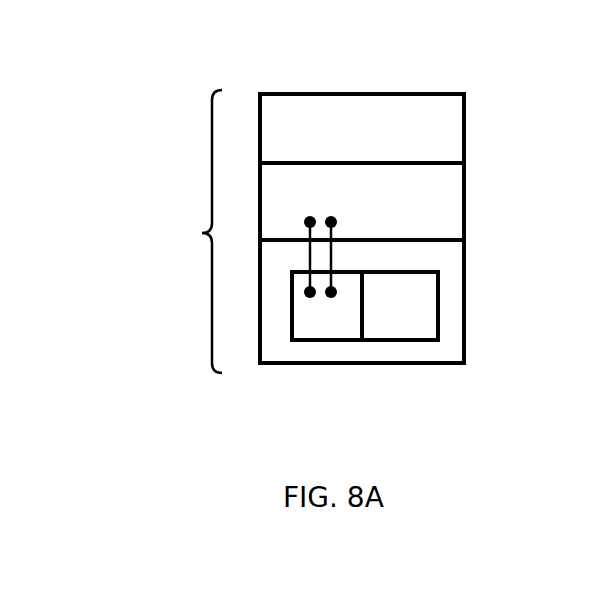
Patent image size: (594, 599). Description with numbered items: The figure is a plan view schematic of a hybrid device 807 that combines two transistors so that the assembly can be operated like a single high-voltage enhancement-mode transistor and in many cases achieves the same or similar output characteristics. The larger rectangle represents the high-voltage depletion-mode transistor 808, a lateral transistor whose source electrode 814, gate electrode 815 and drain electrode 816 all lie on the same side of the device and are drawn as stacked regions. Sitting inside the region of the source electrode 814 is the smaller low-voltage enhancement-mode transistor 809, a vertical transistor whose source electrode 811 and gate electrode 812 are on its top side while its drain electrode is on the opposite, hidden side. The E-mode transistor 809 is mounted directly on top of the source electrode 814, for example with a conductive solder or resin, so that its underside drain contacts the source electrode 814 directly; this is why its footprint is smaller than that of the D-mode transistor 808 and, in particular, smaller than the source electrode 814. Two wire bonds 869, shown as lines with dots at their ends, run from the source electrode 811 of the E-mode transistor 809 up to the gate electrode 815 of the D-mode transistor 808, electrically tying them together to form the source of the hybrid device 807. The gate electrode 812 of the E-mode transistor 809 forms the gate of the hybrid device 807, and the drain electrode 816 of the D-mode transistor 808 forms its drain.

The hybrid device 807 is at (308, 231).
The high-voltage depletion-mode transistor 808 is at (468, 123).
The low-voltage enhancement-mode transistor 809 is at (403, 343).
The source electrode 811 is at (328, 325).
The gate electrode 812 is at (412, 323).
The source electrode 814 is at (453, 257).
The gate electrode 815 is at (418, 219).
The drain electrode 816 is at (422, 143).
The wire bonds 869 is at (310, 252).